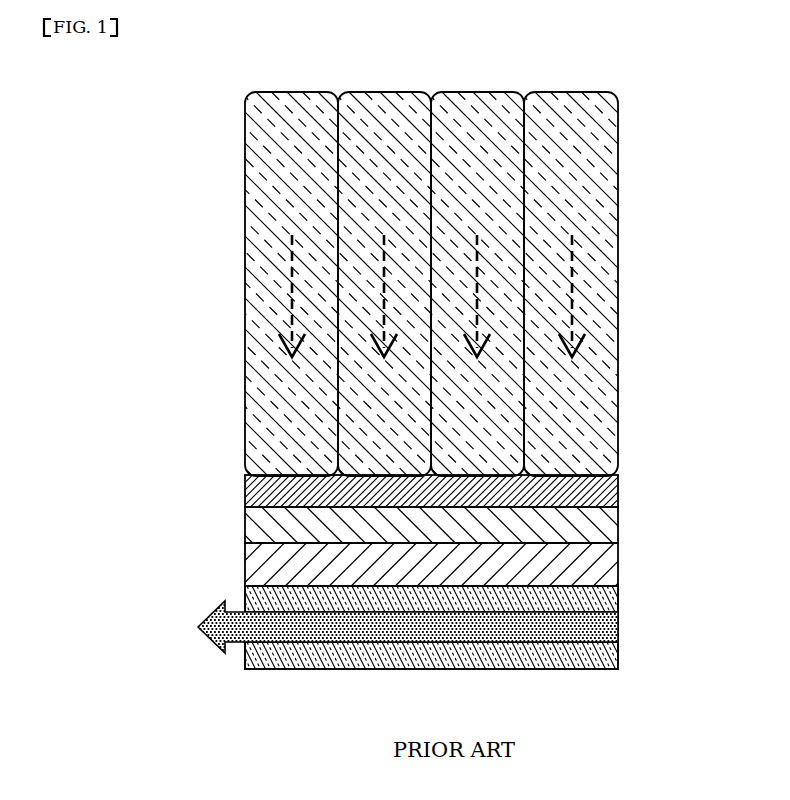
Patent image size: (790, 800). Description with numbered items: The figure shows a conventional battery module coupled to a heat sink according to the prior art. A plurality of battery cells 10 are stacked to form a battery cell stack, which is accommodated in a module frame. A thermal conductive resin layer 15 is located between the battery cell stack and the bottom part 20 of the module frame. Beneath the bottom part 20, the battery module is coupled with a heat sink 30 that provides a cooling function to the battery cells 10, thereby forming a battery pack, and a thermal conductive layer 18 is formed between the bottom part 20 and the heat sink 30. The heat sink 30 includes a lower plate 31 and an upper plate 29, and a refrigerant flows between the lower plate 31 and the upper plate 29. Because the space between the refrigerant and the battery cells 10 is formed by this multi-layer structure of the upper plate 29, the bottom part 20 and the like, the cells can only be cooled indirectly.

The battery cell 10 is at (593, 166).
The thermal conductive resin layer 15 is at (612, 489).
The bottom part of the module frame 20 is at (608, 526).
The thermal conductive layer 18 is at (608, 565).
The upper plate 29 is at (608, 597).
The heat sink 30 is at (671, 590).
The lower plate 31 is at (608, 654).